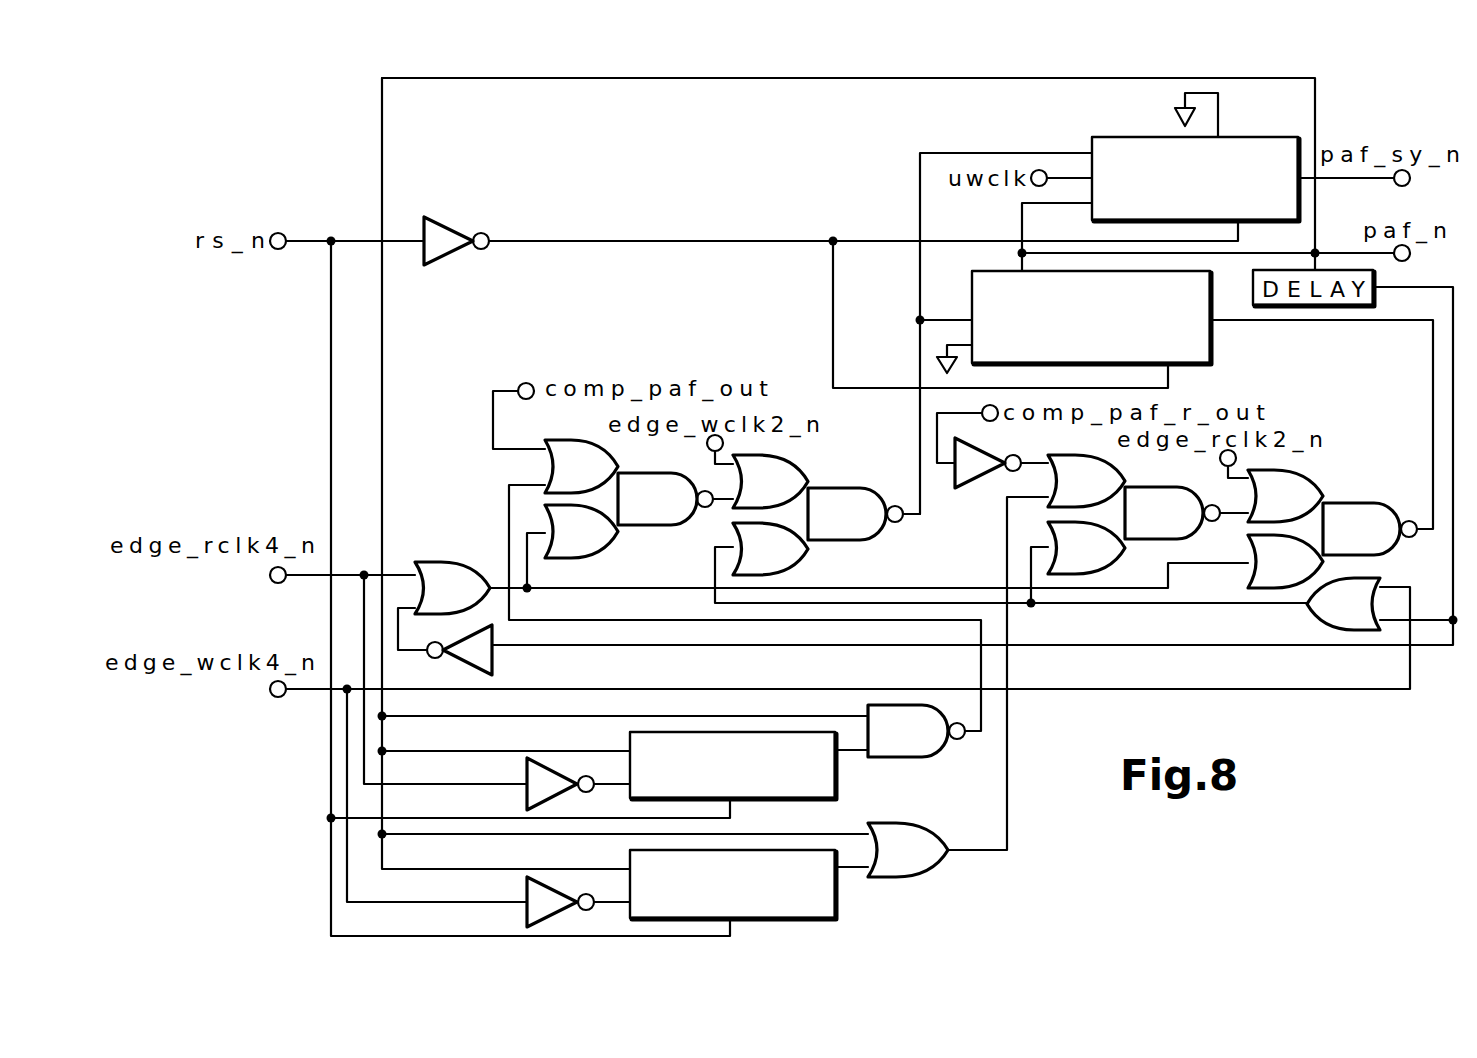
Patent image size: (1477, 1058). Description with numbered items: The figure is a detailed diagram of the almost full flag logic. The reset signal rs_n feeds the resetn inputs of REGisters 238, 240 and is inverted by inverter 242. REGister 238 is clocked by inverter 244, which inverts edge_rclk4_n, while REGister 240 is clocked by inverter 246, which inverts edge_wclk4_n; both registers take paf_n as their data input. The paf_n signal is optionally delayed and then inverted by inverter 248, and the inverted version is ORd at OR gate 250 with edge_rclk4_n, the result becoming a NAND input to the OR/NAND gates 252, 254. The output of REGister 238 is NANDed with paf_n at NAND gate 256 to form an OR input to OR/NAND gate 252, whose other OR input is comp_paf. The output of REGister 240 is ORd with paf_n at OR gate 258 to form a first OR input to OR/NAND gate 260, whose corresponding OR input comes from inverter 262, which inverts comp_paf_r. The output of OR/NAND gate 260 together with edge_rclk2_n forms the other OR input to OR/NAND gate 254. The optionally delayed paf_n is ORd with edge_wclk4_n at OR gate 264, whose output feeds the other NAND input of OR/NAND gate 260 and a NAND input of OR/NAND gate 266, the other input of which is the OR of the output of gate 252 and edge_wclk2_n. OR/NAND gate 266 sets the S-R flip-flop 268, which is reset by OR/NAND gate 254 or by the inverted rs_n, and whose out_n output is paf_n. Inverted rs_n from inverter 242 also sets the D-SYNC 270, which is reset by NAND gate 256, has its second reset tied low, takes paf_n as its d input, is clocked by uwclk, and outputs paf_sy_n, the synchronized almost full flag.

The REGister 238 is at (837, 788).
The REGister 240 is at (837, 908).
The inverter 242 is at (466, 228).
The inverter 244 is at (527, 797).
The inverter 246 is at (527, 915).
The inverter 248 is at (493, 675).
The OR gate 250 is at (472, 565).
The OR/NAND gate 252 is at (610, 550).
The OR/NAND gate 254 is at (1340, 492).
The NAND gate 256 is at (915, 760).
The OR gate 258 is at (930, 872).
The OR/NAND gate 260 is at (1130, 550).
The inverter 262 is at (970, 488).
The OR gate 264 is at (1313, 620).
The OR/NAND gate 266 is at (823, 548).
The S-R flip-flop 268 is at (1212, 352).
The D-SYNC 270 is at (1130, 137).